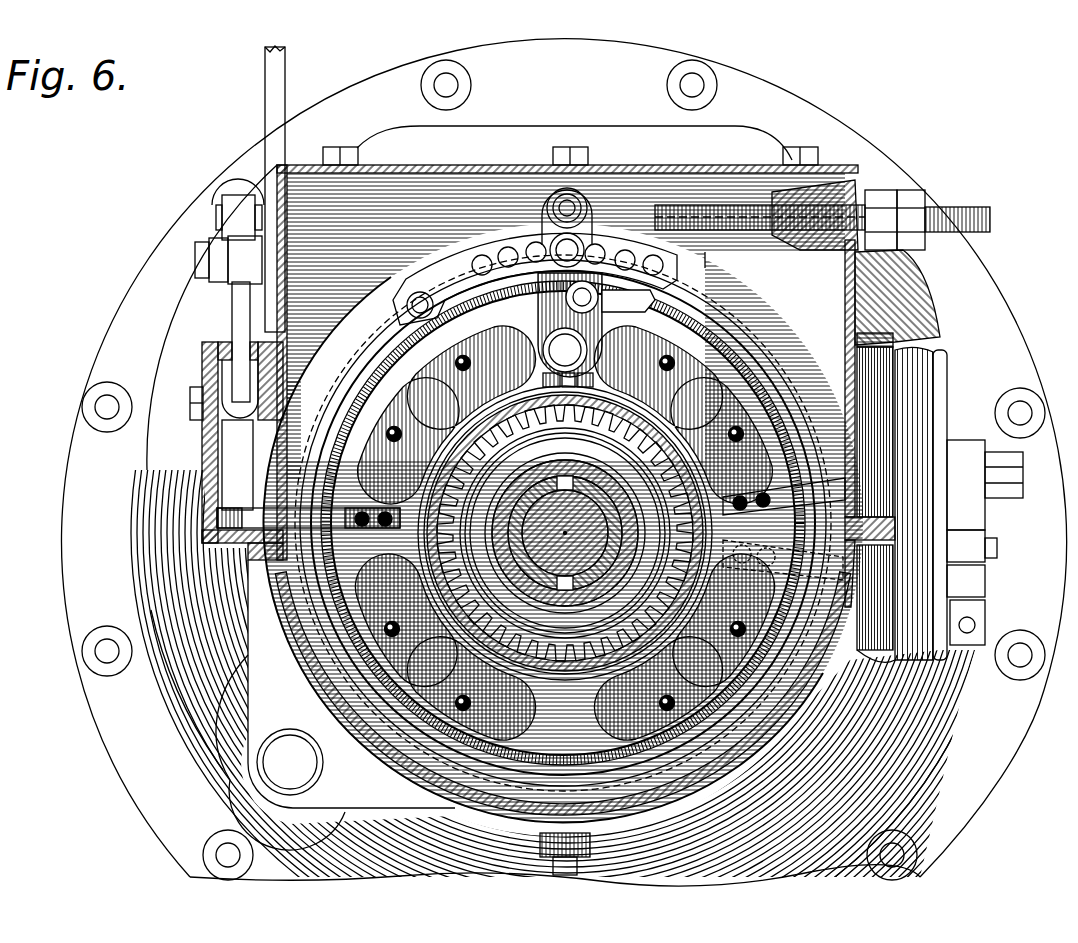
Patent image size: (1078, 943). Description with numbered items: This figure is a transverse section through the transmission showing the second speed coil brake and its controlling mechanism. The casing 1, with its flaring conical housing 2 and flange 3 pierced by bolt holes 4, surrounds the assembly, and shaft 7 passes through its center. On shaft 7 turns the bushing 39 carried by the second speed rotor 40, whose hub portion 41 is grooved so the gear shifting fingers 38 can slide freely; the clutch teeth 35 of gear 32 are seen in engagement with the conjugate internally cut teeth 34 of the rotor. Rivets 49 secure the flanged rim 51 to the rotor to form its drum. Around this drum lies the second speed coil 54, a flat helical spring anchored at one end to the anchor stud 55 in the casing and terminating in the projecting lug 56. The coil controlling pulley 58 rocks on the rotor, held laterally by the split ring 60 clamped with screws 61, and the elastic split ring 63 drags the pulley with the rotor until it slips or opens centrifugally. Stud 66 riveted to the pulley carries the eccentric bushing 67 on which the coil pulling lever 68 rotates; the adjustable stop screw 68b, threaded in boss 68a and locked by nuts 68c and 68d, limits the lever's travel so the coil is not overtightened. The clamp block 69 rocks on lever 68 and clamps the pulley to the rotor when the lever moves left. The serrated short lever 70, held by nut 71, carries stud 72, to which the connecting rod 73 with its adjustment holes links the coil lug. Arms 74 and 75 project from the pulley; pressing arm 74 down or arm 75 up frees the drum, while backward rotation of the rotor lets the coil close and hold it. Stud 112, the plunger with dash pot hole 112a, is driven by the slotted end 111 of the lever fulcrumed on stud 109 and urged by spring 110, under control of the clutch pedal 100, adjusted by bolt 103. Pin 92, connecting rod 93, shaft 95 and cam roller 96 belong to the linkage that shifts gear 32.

The casing 1 is at (335, 705).
The conical-shaped housing 2 is at (567, 520).
The flange 3 is at (1000, 745).
The holes 4 is at (1022, 655).
The shaft 7 is at (598, 550).
The gear 32 is at (565, 533).
The internally cut tooth clutch 34 is at (515, 436).
The clutch teeth 35 is at (472, 468).
The gear shifting fingers 38 is at (561, 480).
The bushing 39 is at (606, 528).
The second speed rotor 40 is at (430, 546).
The hub portion 41 is at (602, 500).
The rivets 49 is at (555, 533).
The flanged rim 51 is at (727, 332).
The second speed coil 54 is at (770, 356).
The anchor stud 55 is at (290, 762).
The projecting lug 56 is at (421, 318).
The coil controlling pulley 58 is at (564, 533).
The split ring 60 is at (565, 533).
The screws 61 is at (546, 382).
The split ring 63 is at (518, 757).
The stud 66 is at (552, 350).
The eccentric bushing 67 is at (560, 334).
The coil pulling lever 68 is at (570, 325).
The boss 68a is at (760, 215).
The adjustable stop screw 68b is at (990, 217).
The locking nut 68c is at (882, 192).
The locking nut 68d is at (922, 245).
The clamp block 69 is at (630, 300).
The short lever 70 is at (580, 245).
The nut 71 is at (580, 212).
The stud 72 is at (590, 253).
The connecting rod 73 is at (453, 266).
The arm 74 is at (320, 520).
The arm 75 is at (812, 492).
The pin 92 is at (986, 580).
The adjustable connecting rod 93 is at (978, 645).
The shaft 95 is at (1023, 477).
The cam roller 96 is at (986, 554).
The clutch pedal 100 is at (268, 101).
The bolt 103 is at (186, 405).
The stud 109 is at (195, 250).
The spring 110 is at (236, 263).
The end of lever 111 is at (214, 204).
The stud 112 is at (235, 308).
The hole 112a is at (205, 373).